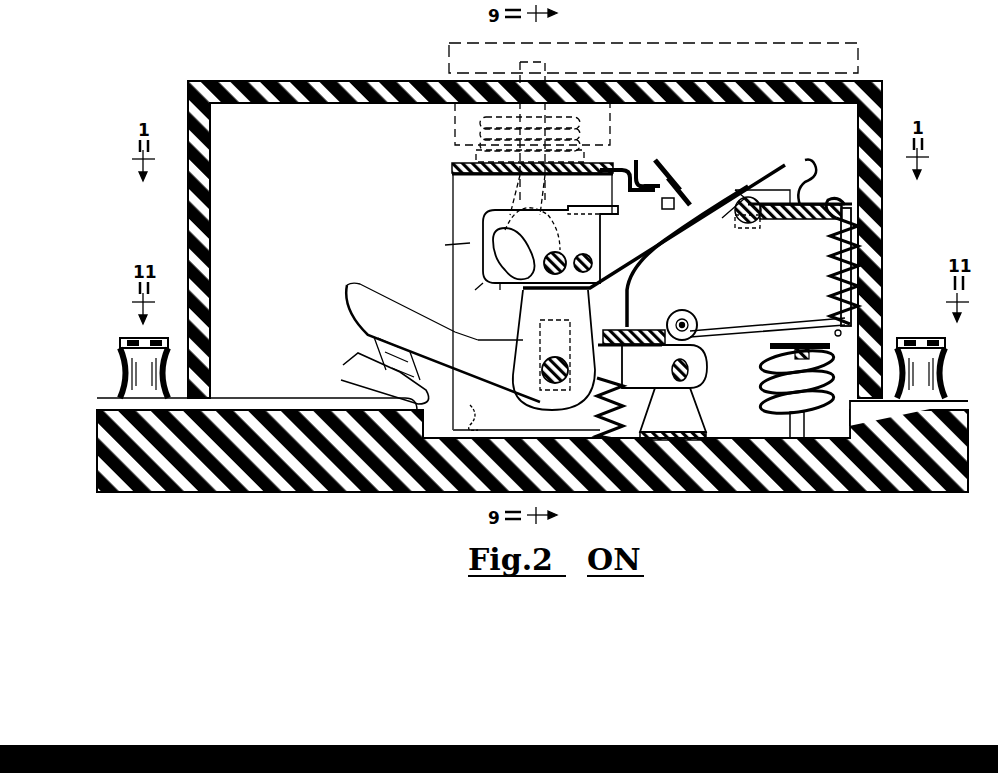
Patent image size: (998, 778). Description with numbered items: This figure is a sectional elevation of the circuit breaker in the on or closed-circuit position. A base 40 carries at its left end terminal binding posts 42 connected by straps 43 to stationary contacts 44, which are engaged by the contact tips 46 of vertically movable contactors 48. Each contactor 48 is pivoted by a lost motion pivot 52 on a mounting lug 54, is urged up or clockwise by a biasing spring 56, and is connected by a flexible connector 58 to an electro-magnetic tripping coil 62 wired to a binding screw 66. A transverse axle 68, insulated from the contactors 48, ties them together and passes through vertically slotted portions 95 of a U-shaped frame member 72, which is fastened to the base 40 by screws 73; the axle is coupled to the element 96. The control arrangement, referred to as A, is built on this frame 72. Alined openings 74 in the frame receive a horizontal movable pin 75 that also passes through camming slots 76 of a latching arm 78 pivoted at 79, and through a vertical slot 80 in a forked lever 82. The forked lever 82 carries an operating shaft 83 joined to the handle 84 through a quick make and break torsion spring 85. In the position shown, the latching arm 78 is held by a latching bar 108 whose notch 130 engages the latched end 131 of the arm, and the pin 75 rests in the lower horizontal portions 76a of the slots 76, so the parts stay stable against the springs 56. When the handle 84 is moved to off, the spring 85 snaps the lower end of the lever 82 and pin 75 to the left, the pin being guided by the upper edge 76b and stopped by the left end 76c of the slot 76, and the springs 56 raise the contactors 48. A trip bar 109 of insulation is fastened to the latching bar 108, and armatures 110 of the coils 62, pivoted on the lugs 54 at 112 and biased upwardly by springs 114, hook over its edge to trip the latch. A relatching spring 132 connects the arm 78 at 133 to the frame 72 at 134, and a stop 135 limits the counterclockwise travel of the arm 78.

The base 40 is at (150, 493).
The terminal binding posts 42 is at (118, 348).
The straps 43 is at (258, 398).
The stationary contacts 44 is at (418, 395).
The contact tips 46 is at (375, 340).
The contactors 48 is at (372, 292).
The lost motion pivots 52 is at (700, 378).
The mounting lugs 54 is at (700, 410).
The biasing springs 56 is at (598, 402).
The flexible connectors 58 is at (636, 322).
The electro-magnetic tripping coils 62 is at (760, 405).
The binding screws 66 is at (950, 350).
The transverse axle 68 is at (540, 395).
The U-shaped frame member 72 is at (483, 215).
The screws 73 is at (470, 405).
The alined openings 74 is at (488, 296).
The movable shaft or pin 75 is at (520, 296).
The camming slots 76 is at (493, 262).
The lower horizontal portions of slots 76a is at (555, 276).
The upper edge of slot 76b is at (548, 210).
The left end of slot 76c is at (500, 235).
The latching arm 78 is at (608, 186).
The pivot of latching arm 79 is at (585, 273).
The vertical slot 80 is at (584, 222).
The forked lever or actuating element 82 is at (505, 190).
The operating shaft 83 is at (546, 66).
The handle 84 is at (712, 52).
The quick make and break torsion spring 85 is at (478, 150).
The vertically slotted portions 95 is at (540, 355).
The element 96 is at (523, 335).
The latching bar 108 is at (810, 172).
The trip bar 109 is at (782, 222).
The armatures 110 is at (812, 322).
The armature pivot 112 is at (690, 316).
The springs 114 is at (845, 294).
The notch 130 is at (740, 235).
The latched end 131 is at (760, 182).
The relatching and actuator returning spring 132 is at (660, 170).
The spring connection on arm 133 is at (662, 203).
The spring connection on frame 134 is at (648, 165).
The stop 135 is at (735, 200).
The control arrangement A is at (445, 243).